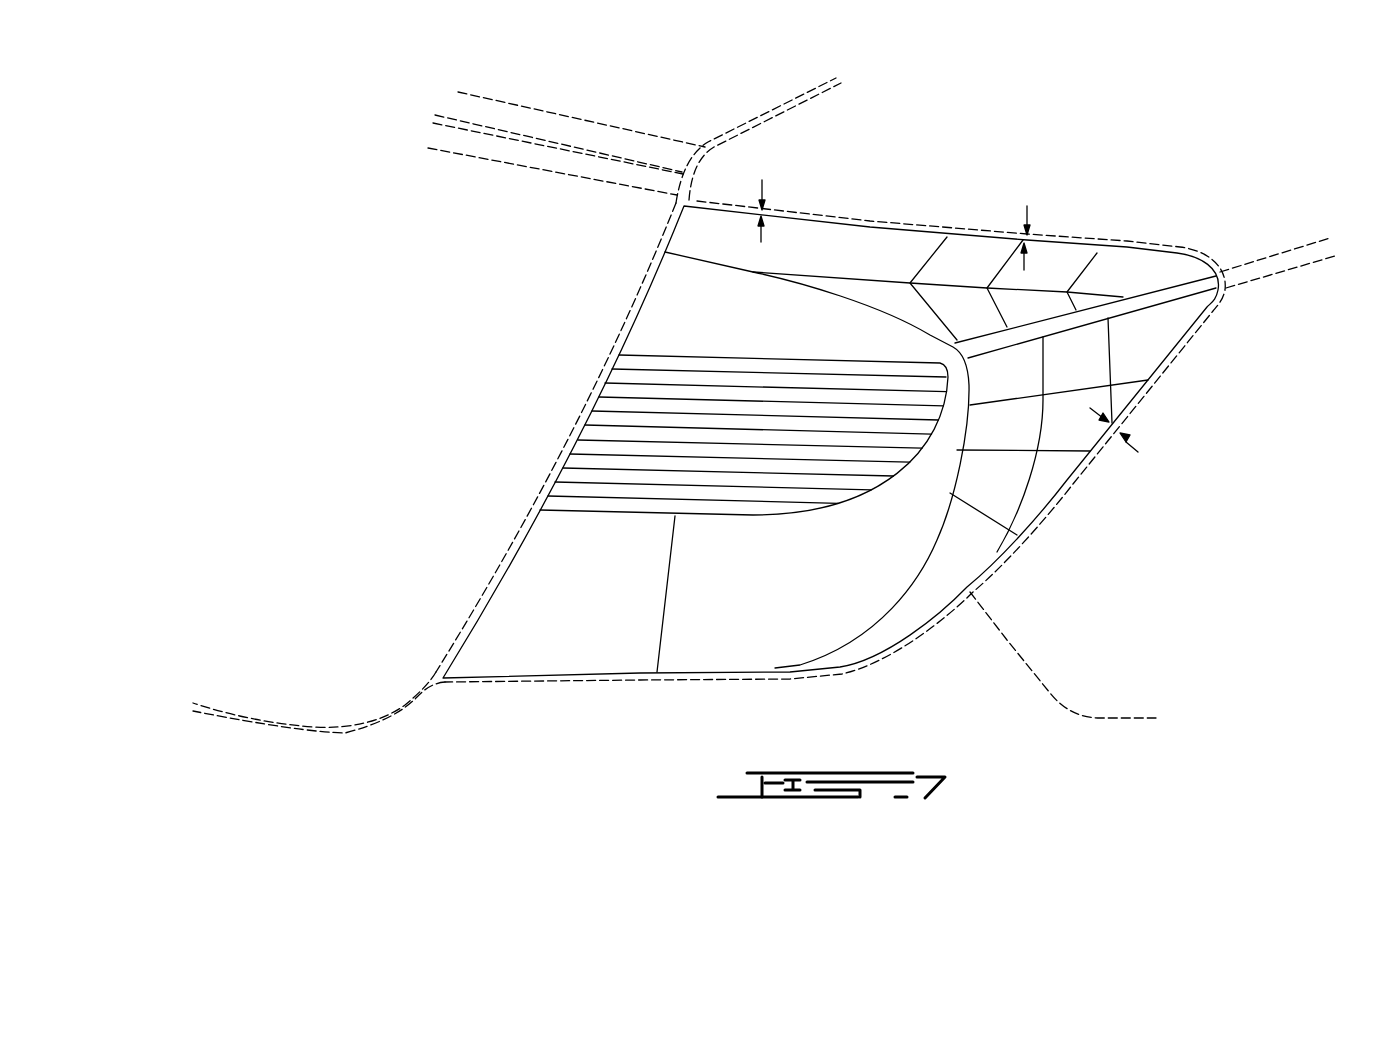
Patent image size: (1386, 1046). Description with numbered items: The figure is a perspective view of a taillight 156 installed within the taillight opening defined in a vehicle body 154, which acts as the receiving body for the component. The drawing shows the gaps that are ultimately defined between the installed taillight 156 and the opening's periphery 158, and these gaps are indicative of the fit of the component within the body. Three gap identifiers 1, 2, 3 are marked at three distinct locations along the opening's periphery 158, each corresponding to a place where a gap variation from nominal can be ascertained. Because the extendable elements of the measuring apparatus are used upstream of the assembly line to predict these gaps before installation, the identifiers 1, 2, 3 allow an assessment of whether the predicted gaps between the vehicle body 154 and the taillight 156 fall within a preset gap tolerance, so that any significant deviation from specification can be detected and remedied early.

The vehicle body 154 is at (840, 118).
The opening's periphery 158 is at (921, 228).
The taillight 156 is at (723, 627).
The gap identifier 1 is at (768, 212).
The gap identifier 2 is at (1030, 240).
The gap identifier 3 is at (1122, 425).